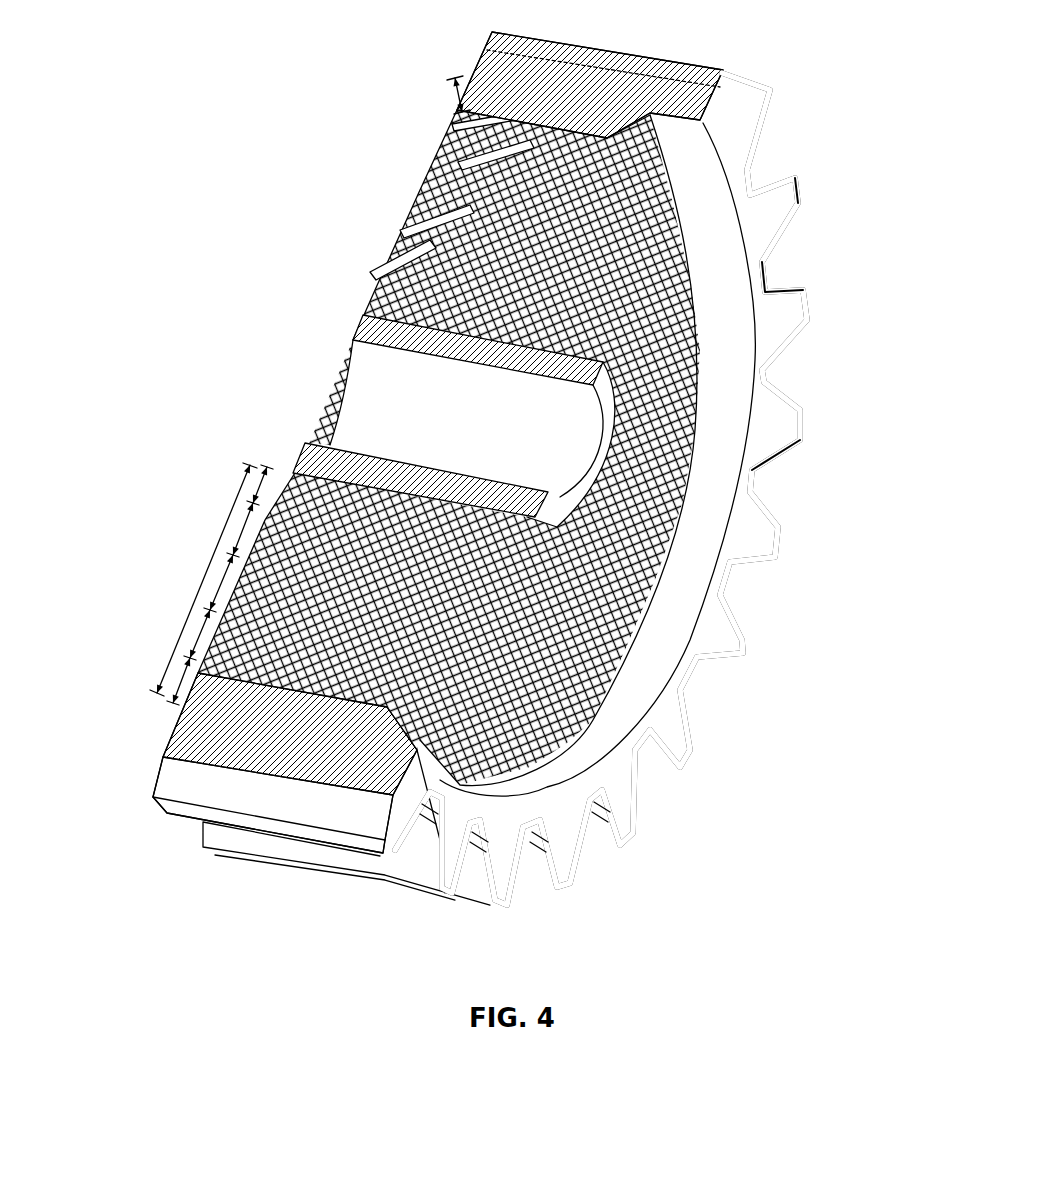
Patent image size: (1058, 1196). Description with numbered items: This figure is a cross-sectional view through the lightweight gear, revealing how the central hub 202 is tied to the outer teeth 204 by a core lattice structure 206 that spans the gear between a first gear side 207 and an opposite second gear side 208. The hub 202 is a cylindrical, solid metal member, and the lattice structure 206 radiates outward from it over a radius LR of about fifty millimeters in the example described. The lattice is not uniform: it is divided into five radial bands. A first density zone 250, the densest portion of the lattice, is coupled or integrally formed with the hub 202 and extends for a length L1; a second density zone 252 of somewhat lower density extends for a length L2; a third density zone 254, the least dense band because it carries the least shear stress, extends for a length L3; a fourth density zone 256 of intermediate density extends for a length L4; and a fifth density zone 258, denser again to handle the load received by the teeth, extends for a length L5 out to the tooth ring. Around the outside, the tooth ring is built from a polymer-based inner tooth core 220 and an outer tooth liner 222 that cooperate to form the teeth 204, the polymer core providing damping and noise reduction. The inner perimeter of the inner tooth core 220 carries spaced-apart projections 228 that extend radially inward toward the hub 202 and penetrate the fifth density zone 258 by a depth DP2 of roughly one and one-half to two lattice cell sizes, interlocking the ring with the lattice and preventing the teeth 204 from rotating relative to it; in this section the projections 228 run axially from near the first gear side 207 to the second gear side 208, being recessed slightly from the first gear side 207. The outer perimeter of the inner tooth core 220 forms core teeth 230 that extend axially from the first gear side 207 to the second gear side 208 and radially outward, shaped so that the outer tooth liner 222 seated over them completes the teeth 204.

The hub 202 is at (612, 390).
The teeth 204 is at (814, 426).
The lattice structure 206 is at (266, 253).
The first gear side 207 is at (785, 500).
The second gear side 208 is at (106, 500).
The inner tooth core 220 is at (788, 229).
The outer tooth liner 222 is at (800, 181).
The projections 228 is at (627, 74).
The core teeth 230 is at (790, 446).
The first density zone 250 is at (762, 294).
The second density zone 252 is at (372, 270).
The third density zone 254 is at (403, 229).
The fourth density zone 256 is at (460, 161).
The fifth density zone 258 is at (453, 122).
The depth DP2 is at (448, 85).
The radius of the lattice structure LR is at (210, 558).
The length of the first density zone L1 is at (245, 470).
The length of the second density zone L2 is at (238, 521).
The length of the third density zone L3 is at (218, 577).
The length of the fourth density zone L4 is at (200, 634).
The length of the fifth density zone L5 is at (178, 679).